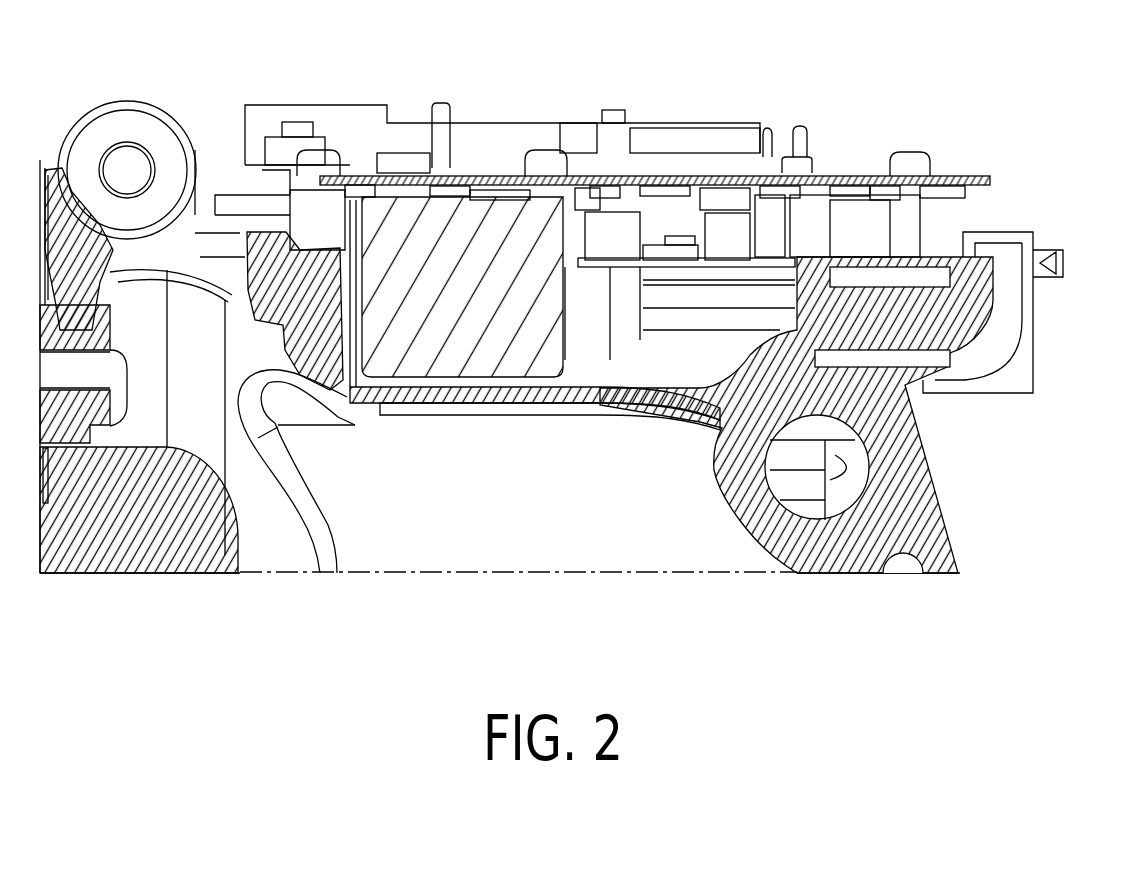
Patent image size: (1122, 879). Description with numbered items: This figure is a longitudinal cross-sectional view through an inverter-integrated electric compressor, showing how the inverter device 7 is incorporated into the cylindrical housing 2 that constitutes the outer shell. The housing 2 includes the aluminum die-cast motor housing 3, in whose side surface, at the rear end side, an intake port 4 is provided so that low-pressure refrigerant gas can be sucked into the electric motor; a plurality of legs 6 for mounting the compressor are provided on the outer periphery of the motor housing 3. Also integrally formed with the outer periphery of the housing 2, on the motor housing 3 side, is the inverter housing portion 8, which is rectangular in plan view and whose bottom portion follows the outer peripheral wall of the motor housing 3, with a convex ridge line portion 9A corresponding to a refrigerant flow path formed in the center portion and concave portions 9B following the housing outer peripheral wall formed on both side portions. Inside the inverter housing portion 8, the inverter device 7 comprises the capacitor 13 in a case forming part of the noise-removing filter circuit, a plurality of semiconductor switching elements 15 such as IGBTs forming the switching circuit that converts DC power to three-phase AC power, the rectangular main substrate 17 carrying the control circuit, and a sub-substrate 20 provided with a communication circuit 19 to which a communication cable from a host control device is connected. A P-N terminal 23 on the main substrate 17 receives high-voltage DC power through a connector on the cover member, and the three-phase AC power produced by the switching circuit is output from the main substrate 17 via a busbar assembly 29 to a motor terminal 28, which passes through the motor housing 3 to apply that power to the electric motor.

The housing 2 is at (188, 578).
The motor housing 3 is at (570, 540).
The intake port 4 is at (795, 505).
The legs 6 is at (121, 132).
The inverter device 7 is at (812, 135).
The inverter housing portion 8 is at (1000, 288).
The convex ridge line portion 9A is at (692, 278).
The concave portions 9B is at (465, 372).
The capacitor 13 is at (472, 233).
The semiconductor switching elements 15 is at (640, 225).
The main substrate 17 is at (575, 172).
The communication circuit 19 is at (668, 243).
The sub-substrate 20 is at (742, 260).
The P-N terminal 23 is at (437, 108).
The motor terminal 28 is at (258, 213).
The busbar assembly 29 is at (368, 140).